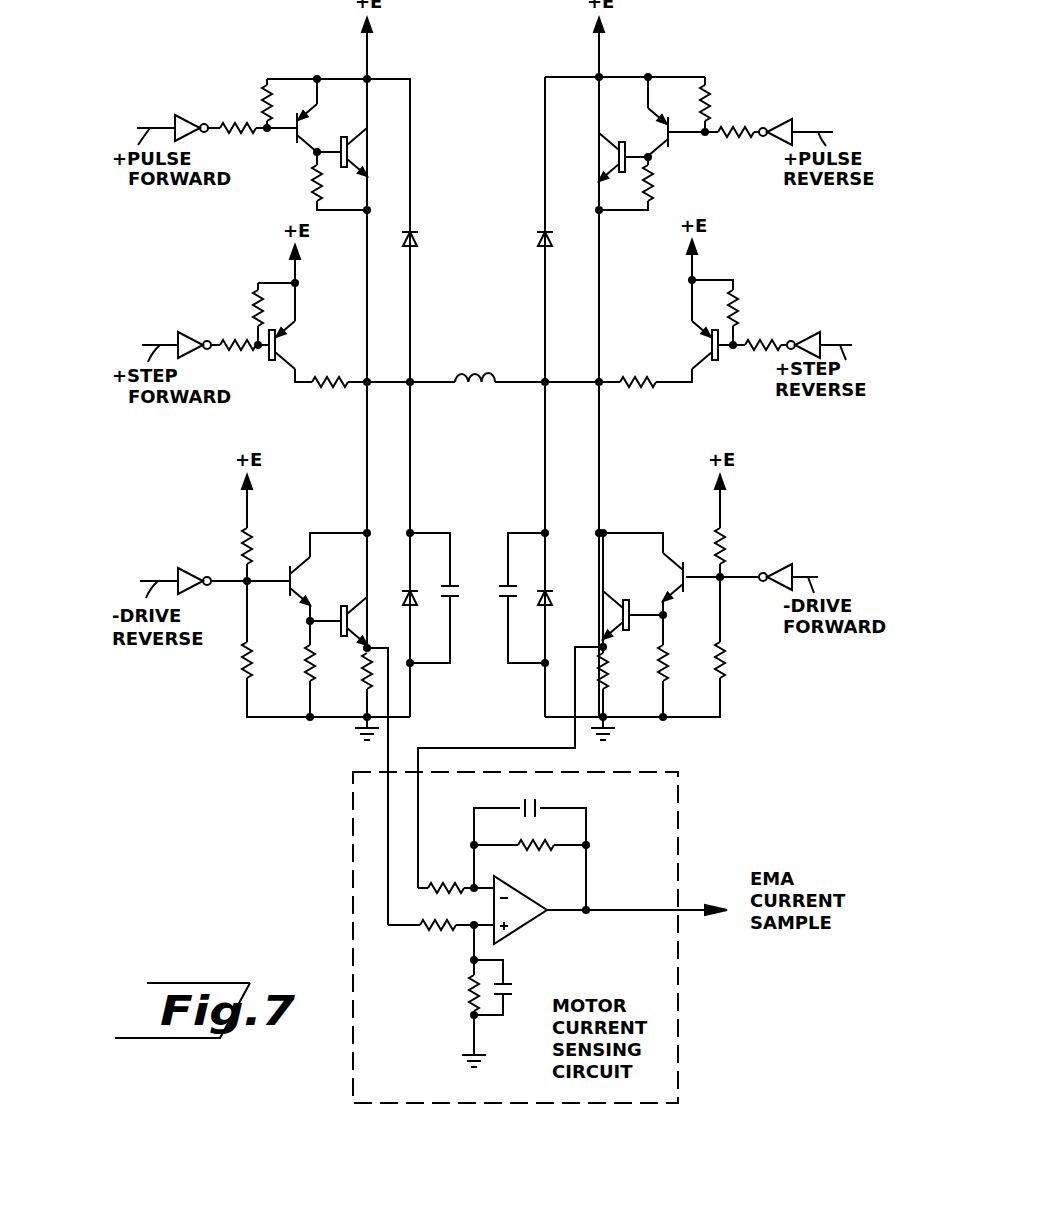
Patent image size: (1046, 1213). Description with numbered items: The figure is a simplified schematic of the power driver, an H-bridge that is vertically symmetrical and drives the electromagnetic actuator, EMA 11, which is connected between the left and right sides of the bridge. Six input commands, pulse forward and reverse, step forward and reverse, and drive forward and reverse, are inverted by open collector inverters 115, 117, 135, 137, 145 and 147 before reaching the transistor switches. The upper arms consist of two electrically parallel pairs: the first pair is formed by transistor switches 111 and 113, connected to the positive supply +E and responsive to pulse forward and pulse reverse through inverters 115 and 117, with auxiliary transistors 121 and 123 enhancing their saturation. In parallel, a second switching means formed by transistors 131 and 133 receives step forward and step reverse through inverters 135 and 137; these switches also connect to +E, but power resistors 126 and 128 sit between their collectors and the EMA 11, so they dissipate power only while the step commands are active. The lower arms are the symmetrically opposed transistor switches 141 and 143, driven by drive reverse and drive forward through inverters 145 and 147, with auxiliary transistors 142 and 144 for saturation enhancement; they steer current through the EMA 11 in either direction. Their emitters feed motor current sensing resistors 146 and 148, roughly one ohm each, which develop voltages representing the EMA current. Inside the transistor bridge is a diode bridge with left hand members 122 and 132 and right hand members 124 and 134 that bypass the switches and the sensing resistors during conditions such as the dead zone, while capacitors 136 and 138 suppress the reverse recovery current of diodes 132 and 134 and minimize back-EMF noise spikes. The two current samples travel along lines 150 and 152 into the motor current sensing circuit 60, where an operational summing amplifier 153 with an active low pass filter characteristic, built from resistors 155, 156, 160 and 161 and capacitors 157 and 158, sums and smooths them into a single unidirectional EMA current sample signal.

The EMA 11 is at (476, 386).
The EMA current sensing circuit 60 is at (680, 1022).
The transistor switch 111 is at (355, 140).
The transistor switch 113 is at (612, 140).
The inverter 115 is at (183, 118).
The inverter 117 is at (775, 122).
The auxiliary transistor 121 is at (300, 140).
The diode 122 is at (424, 236).
The auxiliary transistor 123 is at (672, 125).
The diode 124 is at (541, 240).
The power resistor 126 is at (327, 390).
The power resistor 128 is at (643, 388).
The transistor switch 131 is at (296, 332).
The diode 132 is at (403, 590).
The transistor switch 133 is at (700, 335).
The diode 134 is at (547, 589).
The inverter 135 is at (188, 332).
The capacitor 136 is at (460, 607).
The inverter 137 is at (800, 328).
The capacitor 138 is at (504, 588).
The transistor switch 141 is at (345, 606).
The auxiliary transistor 142 is at (290, 572).
The transistor switch 143 is at (610, 600).
The auxiliary transistor 144 is at (683, 560).
The inverter 145 is at (192, 574).
The motor current sensing resistor 146 is at (358, 668).
The inverter 147 is at (776, 565).
The motor current sensing resistor 148 is at (607, 670).
The line 150 is at (387, 820).
The line 152 is at (418, 828).
The operational summing amplifier 153 is at (527, 920).
The resistor 155 is at (534, 850).
The resistor 156 is at (467, 980).
The capacitor 157 is at (540, 806).
The capacitor 158 is at (510, 992).
The resistor 160 is at (430, 885).
The resistor 161 is at (446, 935).